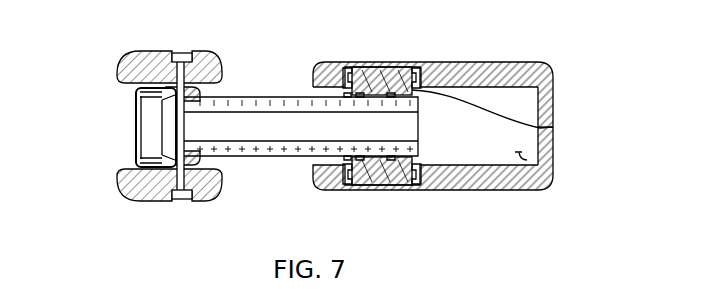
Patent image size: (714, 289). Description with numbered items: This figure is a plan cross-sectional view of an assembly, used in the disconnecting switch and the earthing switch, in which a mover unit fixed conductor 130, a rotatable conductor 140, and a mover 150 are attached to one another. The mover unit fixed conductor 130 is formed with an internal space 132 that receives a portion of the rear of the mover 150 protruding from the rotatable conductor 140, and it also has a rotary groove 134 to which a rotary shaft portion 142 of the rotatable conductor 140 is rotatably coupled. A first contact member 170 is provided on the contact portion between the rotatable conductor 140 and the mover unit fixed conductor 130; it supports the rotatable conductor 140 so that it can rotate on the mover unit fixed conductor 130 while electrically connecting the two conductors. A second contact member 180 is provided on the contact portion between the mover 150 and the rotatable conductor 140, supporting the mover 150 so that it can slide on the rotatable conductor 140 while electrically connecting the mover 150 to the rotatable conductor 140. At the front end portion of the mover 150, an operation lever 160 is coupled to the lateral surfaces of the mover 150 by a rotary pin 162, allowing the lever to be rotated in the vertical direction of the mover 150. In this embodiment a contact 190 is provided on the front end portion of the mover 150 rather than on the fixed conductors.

The mover unit fixed conductor 130 is at (536, 70).
The internal space 132 is at (537, 182).
The rotary groove 134 is at (422, 68).
The rotatable conductor 140 is at (556, 129).
The rotary shaft portion 142 is at (410, 70).
The mover 150 is at (247, 105).
The operation lever 160 is at (120, 182).
The rotary pin 162 is at (182, 52).
The first contact member 170 is at (343, 68).
The second contact member 180 is at (392, 93).
The contact 190 is at (147, 126).